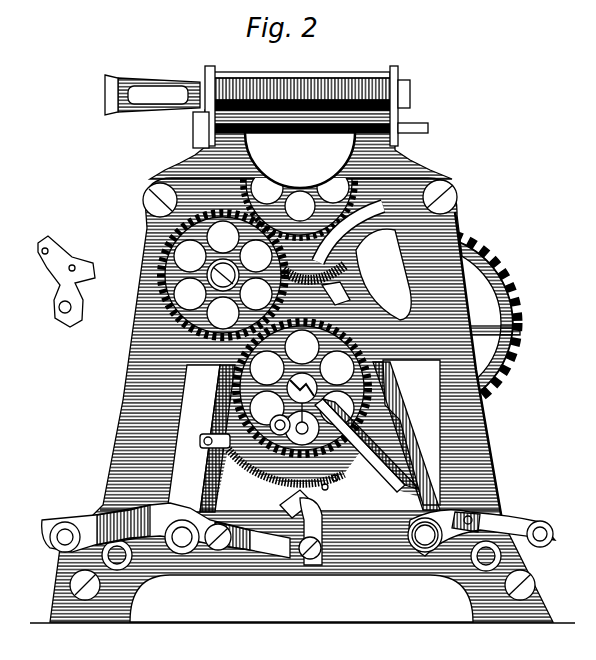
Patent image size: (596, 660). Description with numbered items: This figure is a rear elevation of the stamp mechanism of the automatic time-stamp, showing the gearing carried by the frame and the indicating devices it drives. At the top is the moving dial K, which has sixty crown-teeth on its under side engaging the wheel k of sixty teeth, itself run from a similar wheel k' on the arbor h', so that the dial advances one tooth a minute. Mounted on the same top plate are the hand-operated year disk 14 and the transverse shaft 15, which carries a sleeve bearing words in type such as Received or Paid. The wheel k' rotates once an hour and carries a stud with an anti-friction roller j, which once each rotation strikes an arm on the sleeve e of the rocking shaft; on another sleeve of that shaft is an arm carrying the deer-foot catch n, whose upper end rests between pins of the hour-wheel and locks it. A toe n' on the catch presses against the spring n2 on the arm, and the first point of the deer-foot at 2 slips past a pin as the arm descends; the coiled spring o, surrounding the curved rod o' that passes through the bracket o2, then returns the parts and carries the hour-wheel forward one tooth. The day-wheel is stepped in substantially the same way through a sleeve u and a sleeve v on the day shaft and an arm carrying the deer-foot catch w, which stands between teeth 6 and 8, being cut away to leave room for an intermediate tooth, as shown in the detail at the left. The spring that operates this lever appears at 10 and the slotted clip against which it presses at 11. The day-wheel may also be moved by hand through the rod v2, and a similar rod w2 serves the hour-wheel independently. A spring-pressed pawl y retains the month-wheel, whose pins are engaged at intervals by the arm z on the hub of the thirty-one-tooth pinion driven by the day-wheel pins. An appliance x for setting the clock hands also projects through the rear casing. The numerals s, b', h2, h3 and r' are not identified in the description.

The moving dial K is at (303, 96).
The transverse shaft 15 is at (206, 84).
The knob b' is at (192, 130).
The disk 14 is at (300, 145).
The wheel k is at (299, 182).
The wheel k' is at (223, 298).
The appliance for setting the hands x is at (378, 295).
The spring s is at (312, 282).
The pawl y is at (335, 294).
The arm z is at (505, 378).
The arbor h' is at (302, 388).
The cam h2 is at (300, 365).
The anti-friction roller j is at (275, 420).
The pin h3 is at (304, 419).
The deer-foot catch n is at (201, 438).
The spring 10 is at (287, 467).
The coiled spring o is at (323, 482).
The curved rod o' is at (339, 474).
The bracket o2 is at (290, 504).
The first point of the deer-foot 2 is at (380, 478).
The toe n' is at (406, 435).
The sleeve v is at (182, 548).
The rod v2 is at (57, 530).
The pivot r' is at (187, 534).
The sleeve u is at (408, 535).
The sleeve e is at (412, 548).
The rod for independent hour-wheel operation w2 is at (553, 538).
The spring n2 is at (461, 519).
The clip 11 is at (310, 531).
The deer-foot catch w is at (66, 290).
The tooth 6 is at (48, 250).
The tooth 8 is at (75, 266).